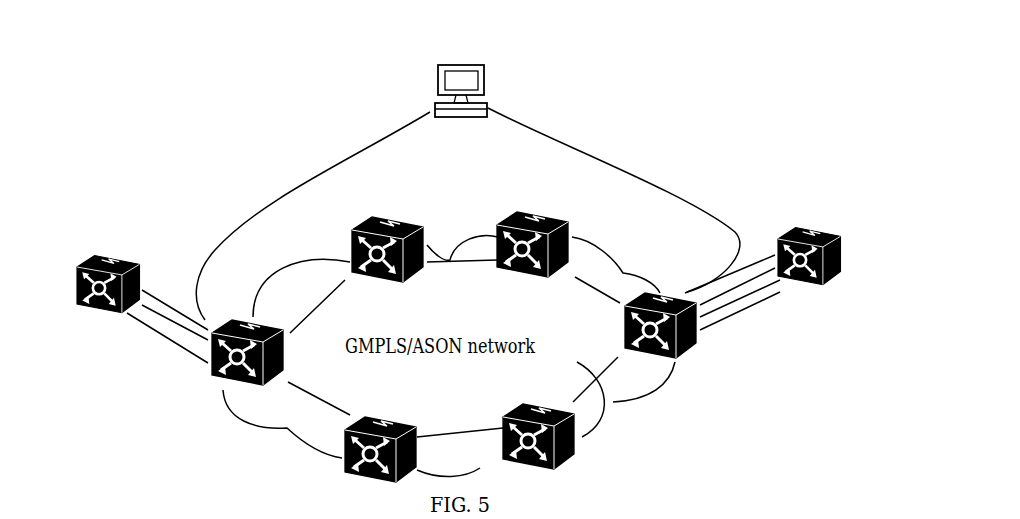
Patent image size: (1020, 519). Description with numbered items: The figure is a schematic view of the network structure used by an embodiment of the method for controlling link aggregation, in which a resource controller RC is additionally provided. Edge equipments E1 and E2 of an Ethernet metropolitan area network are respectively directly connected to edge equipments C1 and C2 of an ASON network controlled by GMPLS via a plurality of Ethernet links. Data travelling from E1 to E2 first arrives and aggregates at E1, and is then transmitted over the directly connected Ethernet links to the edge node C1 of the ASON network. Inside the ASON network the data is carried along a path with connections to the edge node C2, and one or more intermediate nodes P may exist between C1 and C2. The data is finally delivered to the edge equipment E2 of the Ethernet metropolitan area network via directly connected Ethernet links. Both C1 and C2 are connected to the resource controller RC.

The resource controller RC is at (461, 75).
The edge equipment E1 is at (108, 296).
The edge equipment E2 is at (809, 268).
The edge equipment C1 is at (247, 366).
The edge equipment C2 is at (674, 333).
The intermediate node P is at (459, 347).